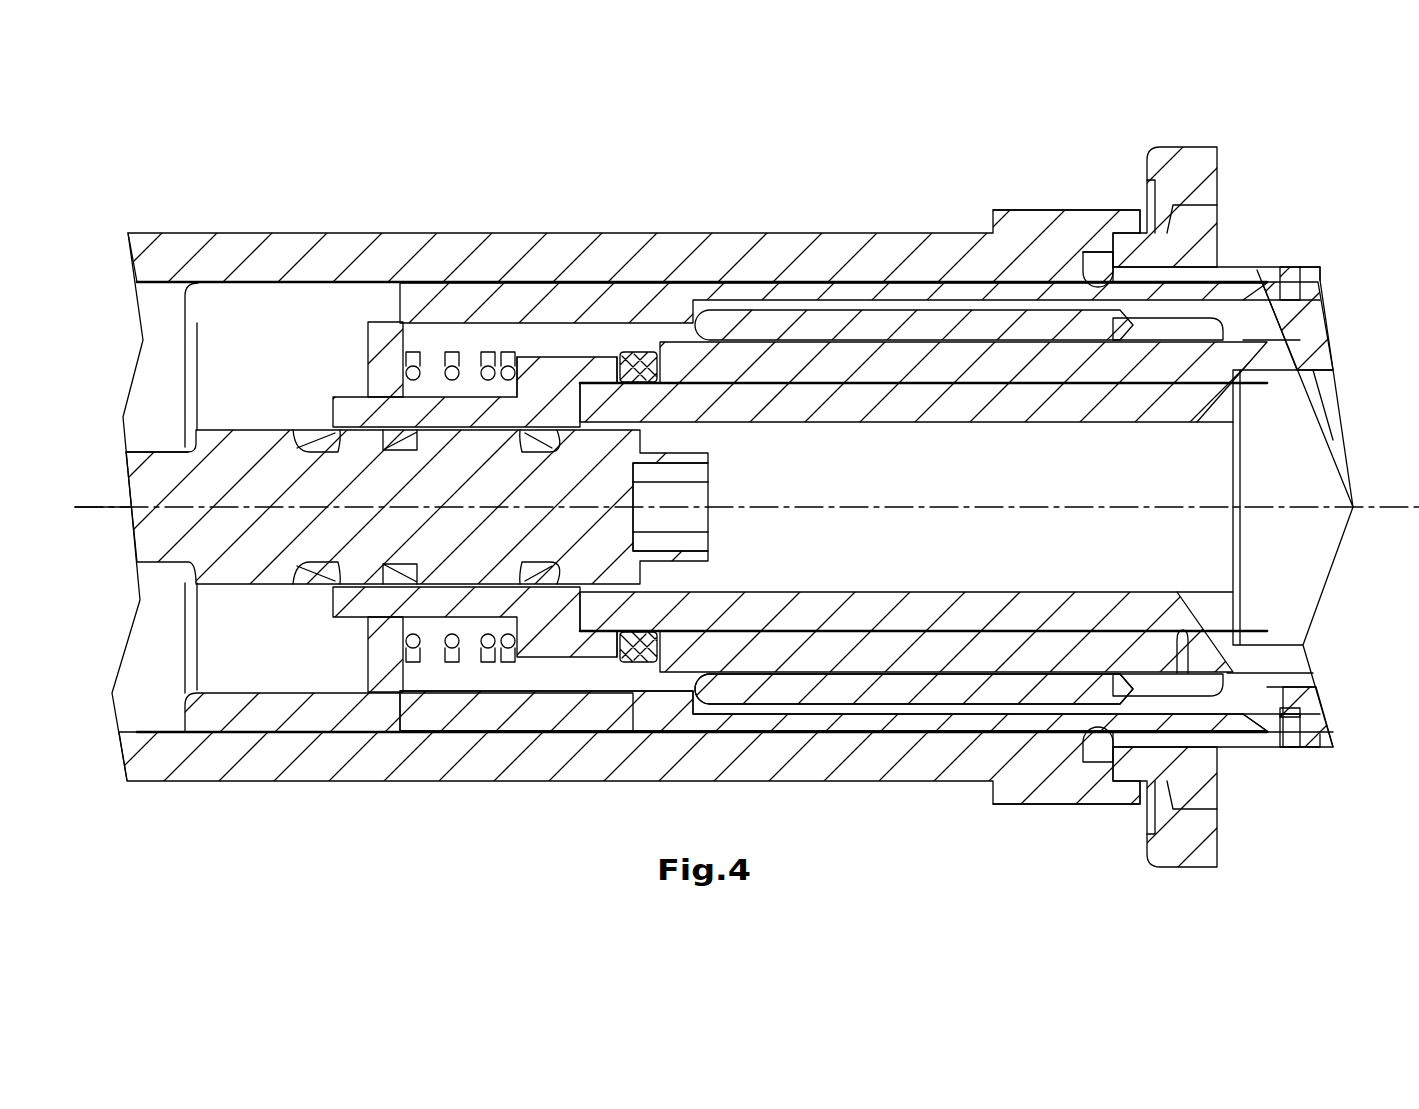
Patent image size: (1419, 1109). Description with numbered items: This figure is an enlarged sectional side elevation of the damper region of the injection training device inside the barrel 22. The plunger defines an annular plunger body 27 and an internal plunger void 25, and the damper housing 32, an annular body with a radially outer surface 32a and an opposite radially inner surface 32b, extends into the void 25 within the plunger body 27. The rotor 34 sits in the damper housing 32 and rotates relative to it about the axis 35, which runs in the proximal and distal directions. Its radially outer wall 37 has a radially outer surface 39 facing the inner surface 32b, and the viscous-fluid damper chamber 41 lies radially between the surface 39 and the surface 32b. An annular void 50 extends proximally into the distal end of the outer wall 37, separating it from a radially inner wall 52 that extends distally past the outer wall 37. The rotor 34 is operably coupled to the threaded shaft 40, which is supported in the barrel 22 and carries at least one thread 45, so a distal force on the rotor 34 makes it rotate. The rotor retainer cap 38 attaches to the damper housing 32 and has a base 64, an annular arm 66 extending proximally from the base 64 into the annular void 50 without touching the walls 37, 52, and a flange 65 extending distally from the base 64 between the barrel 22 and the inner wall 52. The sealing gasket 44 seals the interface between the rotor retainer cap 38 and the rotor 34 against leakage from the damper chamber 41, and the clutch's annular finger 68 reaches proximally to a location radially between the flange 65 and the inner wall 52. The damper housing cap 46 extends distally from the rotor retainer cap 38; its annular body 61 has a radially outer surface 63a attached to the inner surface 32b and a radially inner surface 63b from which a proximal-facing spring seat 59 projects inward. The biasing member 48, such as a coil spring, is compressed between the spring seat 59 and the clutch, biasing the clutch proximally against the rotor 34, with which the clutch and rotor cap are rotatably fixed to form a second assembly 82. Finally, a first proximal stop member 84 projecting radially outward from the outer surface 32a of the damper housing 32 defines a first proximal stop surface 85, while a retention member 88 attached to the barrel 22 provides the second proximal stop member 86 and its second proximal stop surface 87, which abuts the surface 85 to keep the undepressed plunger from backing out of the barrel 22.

The barrel 22 is at (462, 233).
The internal plunger void 25 is at (1303, 720).
The annular plunger body 27 is at (1310, 273).
The damper housing 32 is at (1293, 300).
The radially outer surface 32a is at (1313, 290).
The radially inner surface 32b is at (1300, 328).
The rotor 34 is at (1288, 343).
The axis of rotation 35 is at (100, 507).
The radially outer wall 37 is at (830, 302).
The rotor retainer cap 38 is at (572, 705).
The radially outer surface 39 is at (1270, 333).
The threaded shaft 40 is at (170, 447).
The damper chamber 41 is at (1317, 372).
The sealing gasket 44 is at (650, 358).
The thread 45 is at (257, 430).
The damper housing cap 46 is at (300, 430).
The biasing member 48 is at (472, 395).
The annular void 50 is at (769, 328).
The radially inner wall 52 is at (715, 380).
The spring seat 59 is at (410, 350).
The annular body 61 is at (365, 322).
The radially outer surface 63a is at (200, 233).
The radially inner surface 63b is at (140, 233).
The base 64 is at (608, 740).
The flange 65 is at (630, 350).
The annular arm 66 is at (903, 675).
The finger 68 is at (598, 352).
The second assembly 82 is at (1252, 680).
The first proximal stop member 84 is at (1085, 265).
The first proximal stop surface 85 is at (1100, 255).
The second proximal stop member 86 is at (1130, 237).
The second proximal stop surface 87 is at (1098, 288).
The retention member 88 is at (1220, 203).